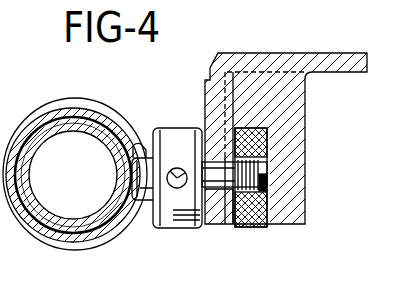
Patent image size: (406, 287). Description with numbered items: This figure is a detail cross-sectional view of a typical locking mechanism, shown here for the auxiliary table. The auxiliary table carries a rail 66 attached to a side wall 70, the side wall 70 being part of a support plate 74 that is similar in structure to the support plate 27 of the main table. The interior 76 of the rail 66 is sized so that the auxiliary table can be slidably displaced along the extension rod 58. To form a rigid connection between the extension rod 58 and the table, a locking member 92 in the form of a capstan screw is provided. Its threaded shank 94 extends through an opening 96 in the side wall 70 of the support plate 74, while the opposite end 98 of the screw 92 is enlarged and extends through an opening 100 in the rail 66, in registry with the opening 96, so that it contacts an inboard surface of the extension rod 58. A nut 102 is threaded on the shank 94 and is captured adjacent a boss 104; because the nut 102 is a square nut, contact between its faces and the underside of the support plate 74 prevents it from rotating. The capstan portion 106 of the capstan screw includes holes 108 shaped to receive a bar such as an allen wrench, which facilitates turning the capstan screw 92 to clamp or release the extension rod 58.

The support plate 27 is at (285, 138).
The extension rod 58 is at (35, 215).
The rail 66 is at (97, 110).
The side wall 70 is at (228, 212).
The support plate 74 is at (313, 53).
The interior of rail 76 is at (100, 247).
The locking member 92 is at (187, 97).
The threaded shank 94 is at (294, 192).
The opening 96 is at (218, 218).
The opposite end 98 is at (148, 207).
The opening 100 is at (142, 150).
The nut 102 is at (258, 228).
The boss 104 is at (297, 210).
The capstan portion 106 is at (178, 191).
The holes 108 is at (180, 163).